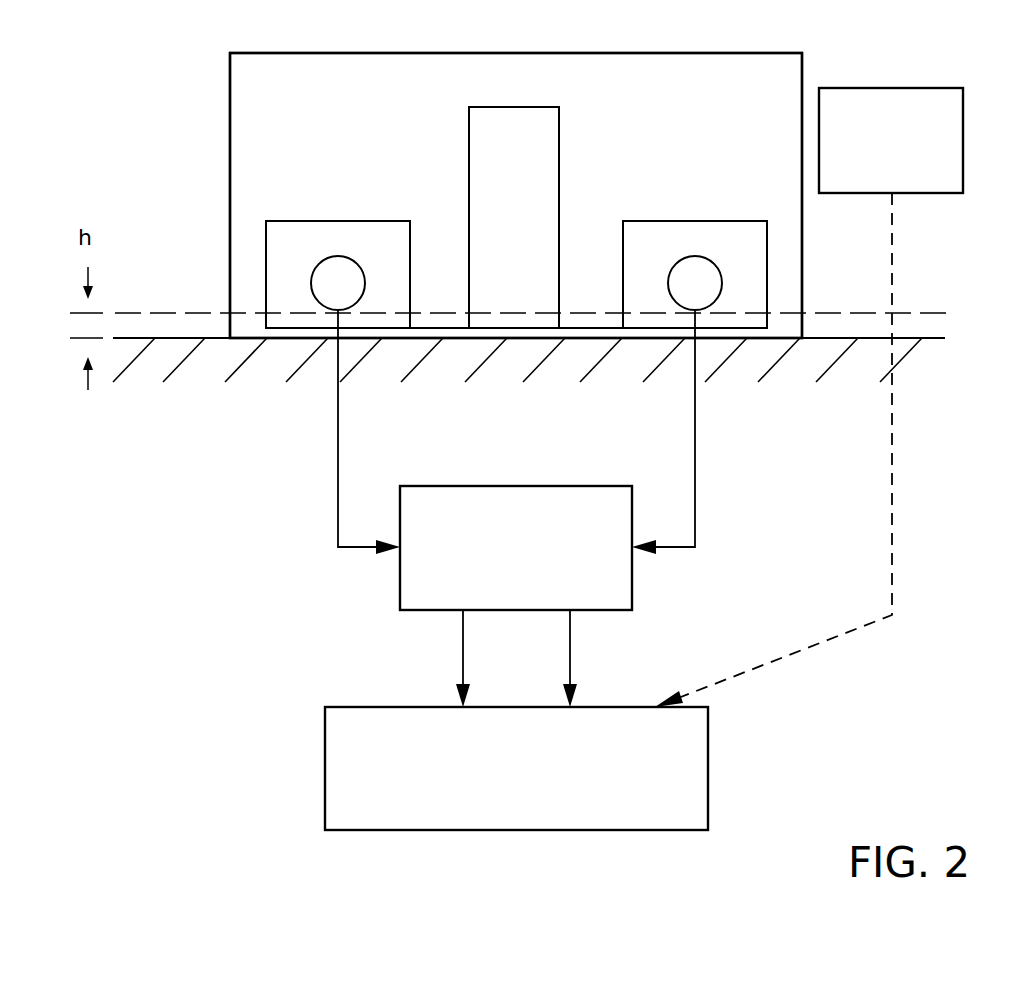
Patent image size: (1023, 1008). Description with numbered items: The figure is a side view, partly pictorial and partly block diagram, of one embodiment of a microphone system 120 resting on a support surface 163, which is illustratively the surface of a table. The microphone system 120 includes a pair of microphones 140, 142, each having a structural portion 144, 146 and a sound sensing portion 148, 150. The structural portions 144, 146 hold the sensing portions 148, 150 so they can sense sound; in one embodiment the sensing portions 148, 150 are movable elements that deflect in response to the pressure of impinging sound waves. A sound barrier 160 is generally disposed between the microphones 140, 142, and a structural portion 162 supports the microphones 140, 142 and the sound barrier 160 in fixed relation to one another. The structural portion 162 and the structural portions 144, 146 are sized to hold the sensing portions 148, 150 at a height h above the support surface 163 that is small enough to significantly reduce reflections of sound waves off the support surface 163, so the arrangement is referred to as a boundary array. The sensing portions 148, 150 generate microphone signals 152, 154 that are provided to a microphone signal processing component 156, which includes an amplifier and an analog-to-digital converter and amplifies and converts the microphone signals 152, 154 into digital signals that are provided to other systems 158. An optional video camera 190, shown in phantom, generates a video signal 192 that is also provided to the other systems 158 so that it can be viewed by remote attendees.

The microphone system 120 is at (717, 46).
The microphone 140 is at (340, 221).
The microphone 142 is at (673, 220).
The structural portion 144 is at (267, 250).
The structural portion 146 is at (767, 247).
The sound sensing portion 148 is at (311, 283).
The sound sensing portion 150 is at (722, 282).
The microphone signal 152 is at (337, 480).
The microphone signal 154 is at (697, 493).
The microphone signal processing component 156 is at (517, 486).
The other systems 158 is at (325, 767).
The sound barrier 160 is at (513, 107).
The structural portion 162 is at (230, 162).
The support surface 163 is at (935, 338).
The video camera 190 is at (890, 88).
The video signal 192 is at (892, 545).